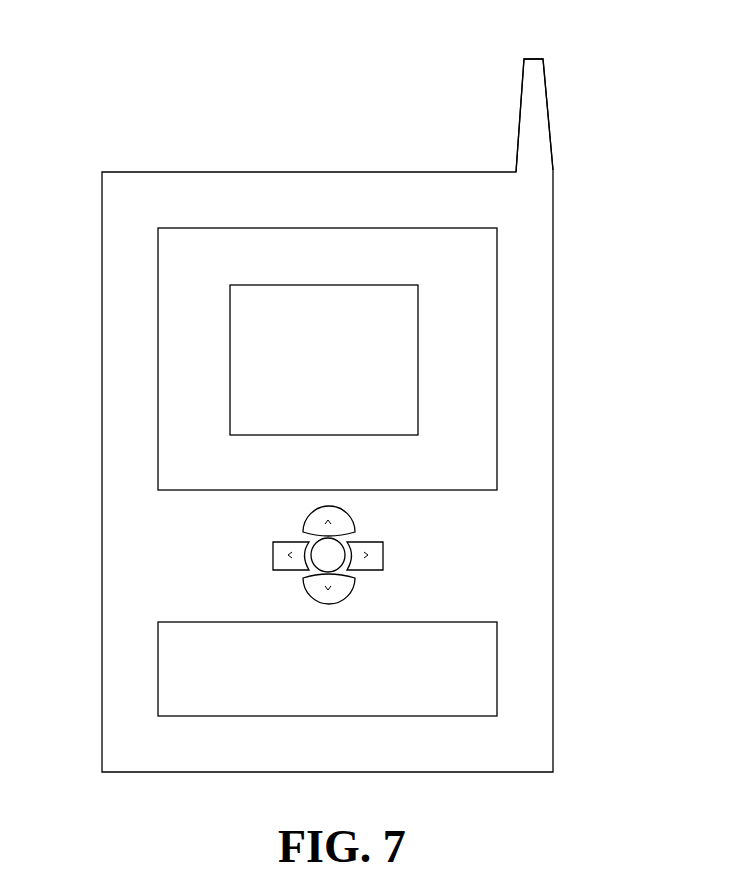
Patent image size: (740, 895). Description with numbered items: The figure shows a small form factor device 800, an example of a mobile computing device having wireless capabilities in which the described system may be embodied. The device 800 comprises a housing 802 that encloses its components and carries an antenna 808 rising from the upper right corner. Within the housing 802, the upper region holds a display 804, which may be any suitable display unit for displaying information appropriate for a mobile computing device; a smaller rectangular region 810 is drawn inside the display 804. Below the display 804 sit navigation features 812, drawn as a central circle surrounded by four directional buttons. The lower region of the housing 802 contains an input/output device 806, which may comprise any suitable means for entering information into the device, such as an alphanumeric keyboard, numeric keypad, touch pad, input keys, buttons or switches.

The small form factor device 800 is at (116, 72).
The housing 802 is at (553, 472).
The display 804 is at (497, 246).
The input/output (I/O) device 806 is at (497, 660).
The antenna 808 is at (524, 107).
The display window 810 is at (418, 378).
The navigation features 812 is at (414, 548).